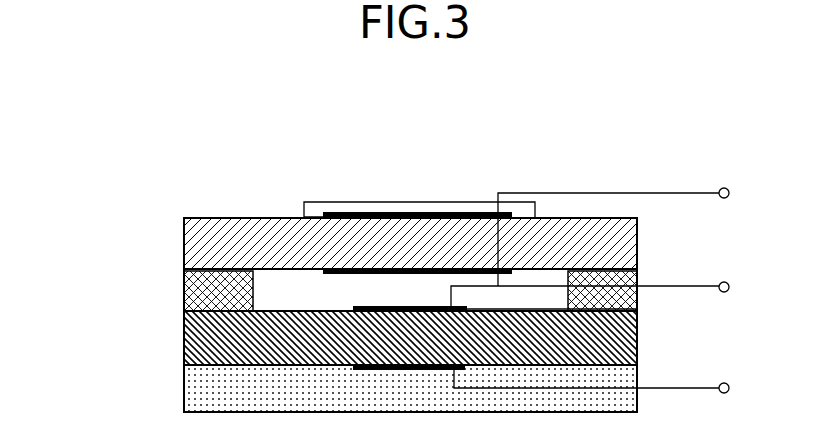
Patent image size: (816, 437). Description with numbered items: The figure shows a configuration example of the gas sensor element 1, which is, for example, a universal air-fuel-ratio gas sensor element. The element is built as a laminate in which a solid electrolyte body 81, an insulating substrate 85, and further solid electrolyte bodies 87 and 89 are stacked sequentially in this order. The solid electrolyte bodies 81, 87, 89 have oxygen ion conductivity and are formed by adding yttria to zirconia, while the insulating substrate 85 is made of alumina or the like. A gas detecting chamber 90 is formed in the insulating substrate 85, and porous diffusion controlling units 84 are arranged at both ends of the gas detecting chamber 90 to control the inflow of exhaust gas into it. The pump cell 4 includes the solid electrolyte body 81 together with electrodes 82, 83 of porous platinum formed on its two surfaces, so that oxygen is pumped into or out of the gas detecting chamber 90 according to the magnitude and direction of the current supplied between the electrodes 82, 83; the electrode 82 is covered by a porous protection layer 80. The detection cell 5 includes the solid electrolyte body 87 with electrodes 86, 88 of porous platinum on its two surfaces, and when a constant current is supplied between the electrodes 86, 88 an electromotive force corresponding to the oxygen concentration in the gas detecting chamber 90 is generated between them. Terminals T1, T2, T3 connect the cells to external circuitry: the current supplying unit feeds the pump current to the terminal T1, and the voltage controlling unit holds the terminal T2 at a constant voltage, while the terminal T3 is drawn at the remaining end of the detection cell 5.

The gas sensor element 1 is at (605, 82).
The pump cell 4 is at (73, 192).
The detection cell 5 is at (73, 372).
The protection layer 80 is at (404, 203).
The solid electrolyte body 81 is at (197, 246).
The electrode 82 is at (357, 213).
The electrode 83 is at (340, 270).
The diffusion controlling unit 84 is at (186, 273).
The insulating substrate 85 is at (540, 295).
The electrode 86 is at (355, 308).
The solid electrolyte body 87 is at (197, 339).
The electrode 88 is at (355, 366).
The solid electrolyte body 89 is at (188, 377).
The gas detecting chamber 90 is at (397, 304).
The terminal T1 is at (727, 189).
The terminal T2 is at (727, 283).
The third terminal T3 is at (727, 384).